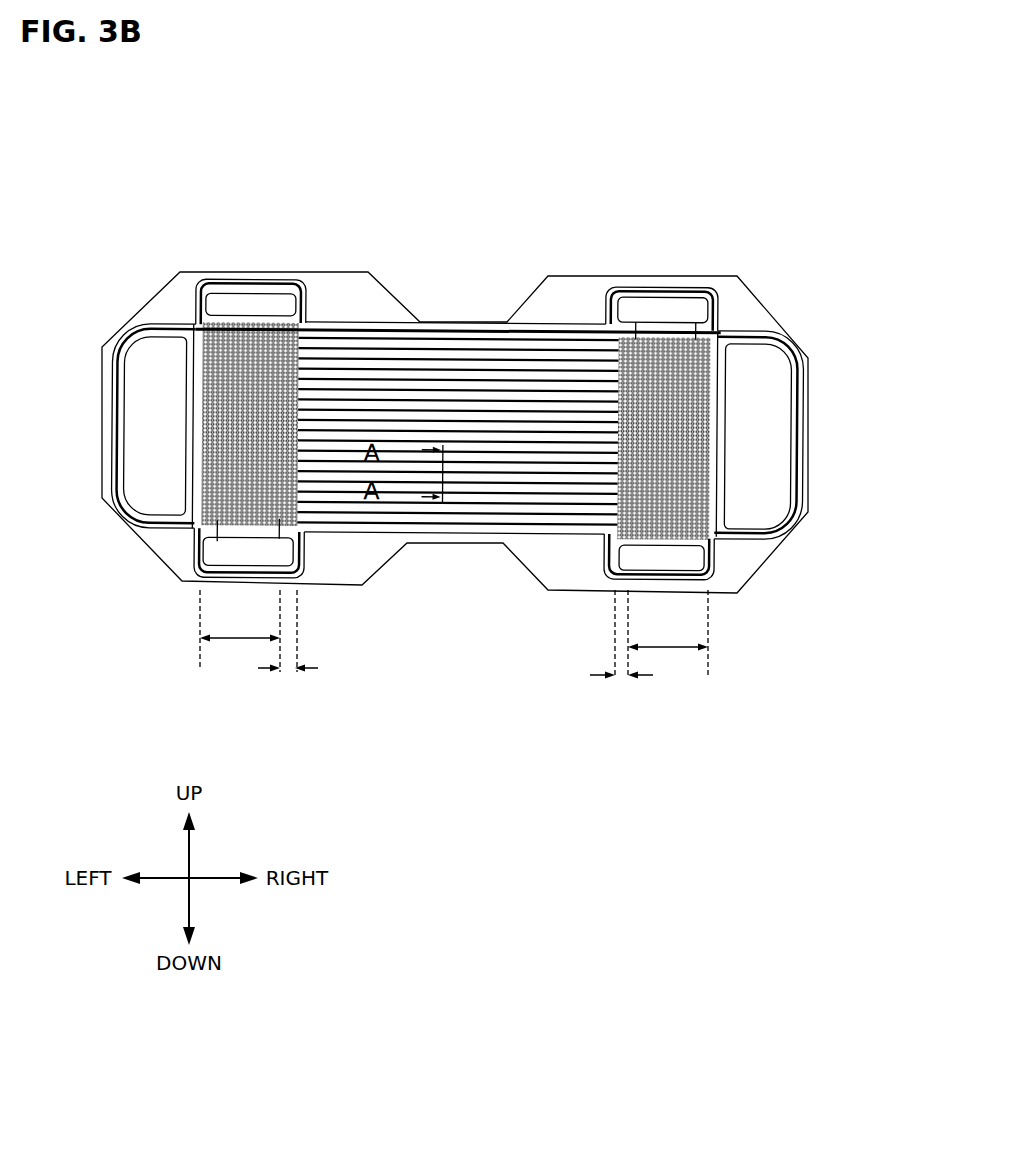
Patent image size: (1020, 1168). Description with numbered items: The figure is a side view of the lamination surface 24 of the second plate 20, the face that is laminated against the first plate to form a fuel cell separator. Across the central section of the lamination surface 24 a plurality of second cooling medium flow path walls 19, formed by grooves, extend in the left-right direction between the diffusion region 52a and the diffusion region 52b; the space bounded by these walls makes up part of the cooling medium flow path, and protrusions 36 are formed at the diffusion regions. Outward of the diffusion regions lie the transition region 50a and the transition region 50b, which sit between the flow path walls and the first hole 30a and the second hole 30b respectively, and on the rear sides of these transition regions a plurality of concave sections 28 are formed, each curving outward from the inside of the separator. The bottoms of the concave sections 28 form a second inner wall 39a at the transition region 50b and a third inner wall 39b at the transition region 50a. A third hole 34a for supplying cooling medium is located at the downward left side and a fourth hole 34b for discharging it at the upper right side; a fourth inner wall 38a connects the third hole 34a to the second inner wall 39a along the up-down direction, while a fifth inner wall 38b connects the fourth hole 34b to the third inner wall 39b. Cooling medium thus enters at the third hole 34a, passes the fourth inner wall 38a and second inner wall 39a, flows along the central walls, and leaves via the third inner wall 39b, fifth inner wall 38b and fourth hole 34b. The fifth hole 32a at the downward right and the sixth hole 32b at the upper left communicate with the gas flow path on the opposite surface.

The second cooling medium flow path walls 19 is at (477, 372).
The second plate 20 is at (441, 471).
The lamination surface 24 is at (580, 582).
The concave sections 28 is at (454, 399).
The first hole 30a is at (758, 425).
The second hole 30b is at (138, 415).
The fifth hole 32a is at (650, 562).
The sixth hole 32b is at (245, 310).
The third hole 34a is at (250, 548).
The fourth hole 34b is at (683, 328).
The protrusions 36 is at (286, 357).
The fourth inner wall 38a is at (262, 537).
The fifth inner wall 38b is at (645, 314).
The second inner wall 39a is at (196, 446).
The third inner wall 39b is at (695, 450).
The transition region 50a is at (668, 634).
The transition region 50b is at (240, 631).
The diffusion region 52a is at (621, 648).
The diffusion region 52b is at (288, 645).